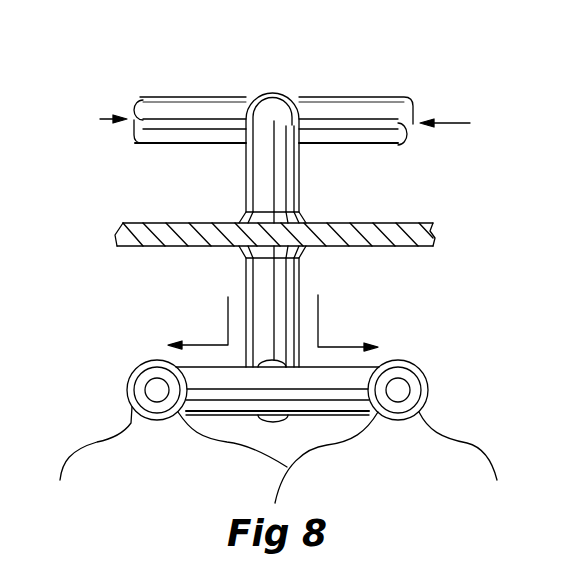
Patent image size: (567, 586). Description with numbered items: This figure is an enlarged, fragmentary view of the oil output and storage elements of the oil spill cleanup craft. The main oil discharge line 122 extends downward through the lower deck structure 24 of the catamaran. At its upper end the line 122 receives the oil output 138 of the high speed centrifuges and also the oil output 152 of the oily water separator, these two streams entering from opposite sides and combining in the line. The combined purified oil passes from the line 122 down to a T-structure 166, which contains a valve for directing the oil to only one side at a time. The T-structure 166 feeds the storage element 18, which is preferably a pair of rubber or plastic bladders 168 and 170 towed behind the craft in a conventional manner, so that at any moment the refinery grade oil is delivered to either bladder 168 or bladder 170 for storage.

The oil output of the high speed centrifuges 138 is at (198, 97).
The oil output of the oily water separator 152 is at (338, 97).
The main oil discharge line 122 is at (299, 195).
The lower deck structure 24 is at (180, 222).
The T-structure 166 is at (299, 293).
The storage element 18 is at (438, 377).
The oil bladder 170 is at (100, 442).
The oil bladder 168 is at (448, 438).